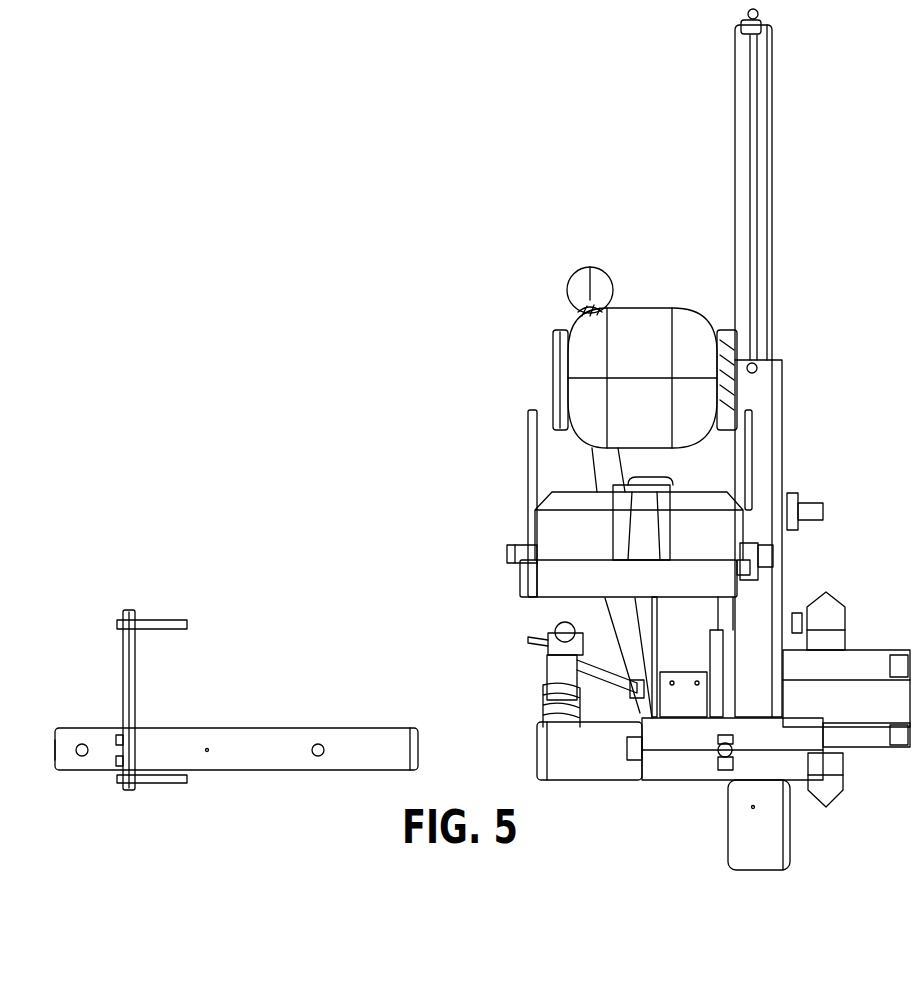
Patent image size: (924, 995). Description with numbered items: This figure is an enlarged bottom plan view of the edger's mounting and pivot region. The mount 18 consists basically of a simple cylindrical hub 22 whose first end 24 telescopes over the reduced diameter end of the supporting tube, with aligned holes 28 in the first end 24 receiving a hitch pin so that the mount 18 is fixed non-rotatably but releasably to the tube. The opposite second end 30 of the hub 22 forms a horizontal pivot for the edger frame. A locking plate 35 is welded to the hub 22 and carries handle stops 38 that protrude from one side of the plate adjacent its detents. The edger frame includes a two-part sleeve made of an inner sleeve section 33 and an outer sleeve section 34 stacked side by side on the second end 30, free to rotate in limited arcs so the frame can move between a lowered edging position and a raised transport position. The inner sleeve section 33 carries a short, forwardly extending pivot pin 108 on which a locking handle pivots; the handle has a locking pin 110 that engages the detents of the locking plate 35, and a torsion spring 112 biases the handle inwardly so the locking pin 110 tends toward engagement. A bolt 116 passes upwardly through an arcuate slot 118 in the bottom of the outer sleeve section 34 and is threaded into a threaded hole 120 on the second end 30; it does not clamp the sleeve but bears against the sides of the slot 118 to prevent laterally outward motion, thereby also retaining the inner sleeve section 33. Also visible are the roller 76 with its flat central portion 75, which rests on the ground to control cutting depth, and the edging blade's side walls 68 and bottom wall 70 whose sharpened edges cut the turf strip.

The mount 18 is at (234, 696).
The hub 22 is at (270, 725).
The first end 24 is at (86, 728).
The holes 28 is at (83, 757).
The second end 30 is at (362, 737).
The inner sleeve section 33 is at (567, 760).
The outer sleeve section 34 is at (655, 765).
The locking plate 35 is at (122, 655).
The handle stops 38 is at (158, 620).
The side walls 68 is at (528, 450).
The bottom wall 70 is at (550, 582).
The central portion 75 is at (619, 360).
The roller 76 is at (639, 411).
The pivot pin 108 is at (560, 630).
The locking pin 110 is at (530, 645).
The torsion spring 112 is at (545, 693).
The bolt 116 is at (720, 757).
The arcuate slot 118 is at (740, 770).
The threaded hole 120 is at (320, 757).